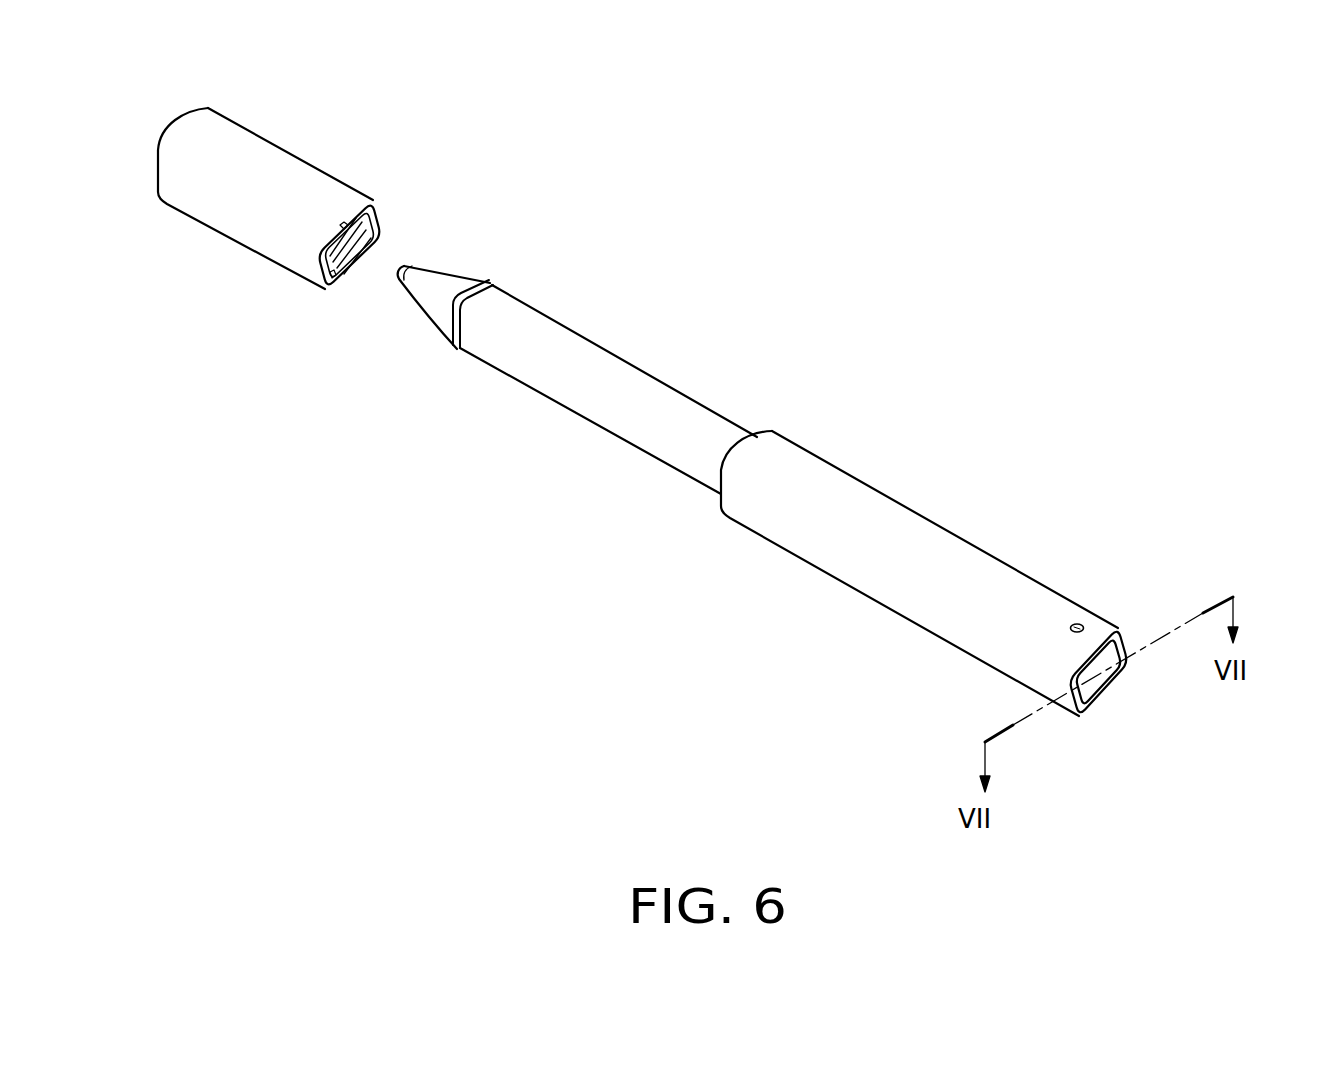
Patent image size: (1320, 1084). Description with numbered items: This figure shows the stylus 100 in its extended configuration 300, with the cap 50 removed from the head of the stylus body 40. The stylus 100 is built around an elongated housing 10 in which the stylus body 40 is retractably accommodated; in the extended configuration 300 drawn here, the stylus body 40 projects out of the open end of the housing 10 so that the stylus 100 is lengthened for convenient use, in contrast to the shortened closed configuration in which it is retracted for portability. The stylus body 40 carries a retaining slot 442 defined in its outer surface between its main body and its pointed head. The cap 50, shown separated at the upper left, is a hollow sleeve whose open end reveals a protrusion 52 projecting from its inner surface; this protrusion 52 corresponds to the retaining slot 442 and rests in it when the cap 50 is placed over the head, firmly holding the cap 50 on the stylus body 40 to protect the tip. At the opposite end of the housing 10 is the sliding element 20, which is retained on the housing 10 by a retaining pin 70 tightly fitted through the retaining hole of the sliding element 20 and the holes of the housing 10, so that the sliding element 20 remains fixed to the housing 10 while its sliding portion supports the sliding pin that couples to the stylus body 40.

The extended configuration 300 is at (1122, 108).
The stylus 100 is at (804, 283).
The housing 10 is at (828, 510).
The sliding element 20 is at (1100, 684).
The stylus body 40 is at (563, 372).
The retaining slot 442 is at (452, 322).
The cap 50 is at (289, 183).
The protrusion 52 is at (368, 236).
The retaining pin 70 is at (1079, 625).